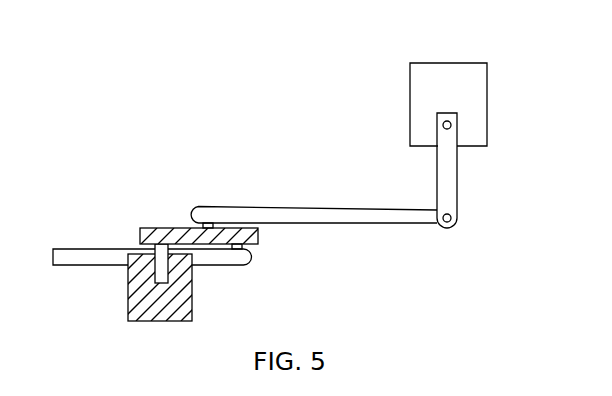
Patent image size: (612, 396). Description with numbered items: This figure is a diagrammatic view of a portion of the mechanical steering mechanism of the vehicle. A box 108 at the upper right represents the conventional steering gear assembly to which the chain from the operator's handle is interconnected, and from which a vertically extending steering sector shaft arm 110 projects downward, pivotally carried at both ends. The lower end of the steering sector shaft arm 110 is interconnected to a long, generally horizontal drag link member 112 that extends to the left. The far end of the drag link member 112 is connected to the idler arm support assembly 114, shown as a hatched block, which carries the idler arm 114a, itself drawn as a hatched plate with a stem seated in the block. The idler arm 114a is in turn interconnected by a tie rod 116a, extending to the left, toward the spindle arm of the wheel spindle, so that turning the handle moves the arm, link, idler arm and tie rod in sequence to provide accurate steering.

The housing / solenoid block 108 is at (465, 70).
The steering sector shaft arm 110 is at (451, 191).
The drag link member 112 is at (300, 212).
The idler arm support assembly 114 is at (128, 300).
The idler arm 114a is at (161, 228).
The tie rod 116a is at (80, 257).